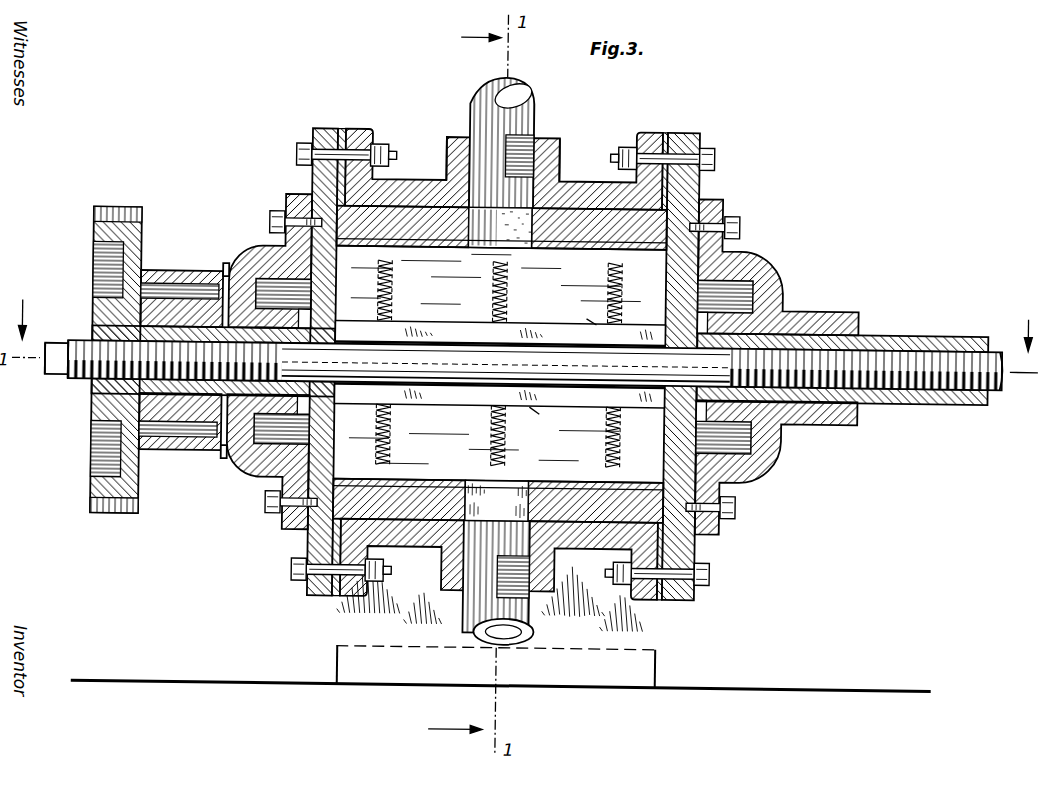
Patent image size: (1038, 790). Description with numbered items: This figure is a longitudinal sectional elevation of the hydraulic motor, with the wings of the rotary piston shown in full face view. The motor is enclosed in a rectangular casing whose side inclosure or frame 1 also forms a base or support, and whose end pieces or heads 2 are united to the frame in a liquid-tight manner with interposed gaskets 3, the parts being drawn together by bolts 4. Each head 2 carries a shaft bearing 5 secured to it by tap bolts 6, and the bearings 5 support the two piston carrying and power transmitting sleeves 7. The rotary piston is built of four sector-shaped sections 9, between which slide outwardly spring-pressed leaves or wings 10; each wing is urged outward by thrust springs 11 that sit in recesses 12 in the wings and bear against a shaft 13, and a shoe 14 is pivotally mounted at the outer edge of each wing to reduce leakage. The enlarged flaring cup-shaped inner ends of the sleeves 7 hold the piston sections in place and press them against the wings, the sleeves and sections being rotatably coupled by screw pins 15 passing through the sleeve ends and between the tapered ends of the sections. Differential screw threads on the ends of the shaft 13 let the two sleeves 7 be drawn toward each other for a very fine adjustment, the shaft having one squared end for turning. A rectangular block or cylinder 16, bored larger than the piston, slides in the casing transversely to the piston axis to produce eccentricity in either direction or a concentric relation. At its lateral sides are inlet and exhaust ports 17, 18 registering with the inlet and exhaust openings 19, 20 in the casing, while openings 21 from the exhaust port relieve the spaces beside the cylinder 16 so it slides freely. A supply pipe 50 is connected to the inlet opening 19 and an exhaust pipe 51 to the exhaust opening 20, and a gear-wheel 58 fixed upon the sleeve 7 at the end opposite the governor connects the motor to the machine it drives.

The side inclosure or frame 1 is at (585, 181).
The end pieces or heads 2 is at (698, 200).
The gaskets 3 is at (664, 135).
The bolts 4 is at (712, 156).
The shaft bearing 5 is at (803, 308).
The tap bolts 6 is at (738, 225).
The piston carrying and power transmitting sleeves 7 is at (524, 364).
The sector-shaped sections 9 is at (563, 367).
The leaves or wings 10 is at (495, 365).
The thrust springs 11 is at (499, 366).
The recesses 12 is at (377, 295).
The shaft 13 is at (1002, 379).
The shoe 14 is at (570, 248).
The screw pins 15 is at (758, 289).
The rectangular block or cylinder 16 is at (398, 243).
The inlet port 17 is at (497, 500).
The exhaust port 18 is at (526, 236).
The inlet opening 19 is at (512, 540).
The exhaust opening 20 is at (533, 190).
The openings 21 is at (500, 227).
The supply pipe 50 is at (478, 625).
The exhaust pipe 51 is at (533, 121).
The gear-wheel 58 is at (105, 215).